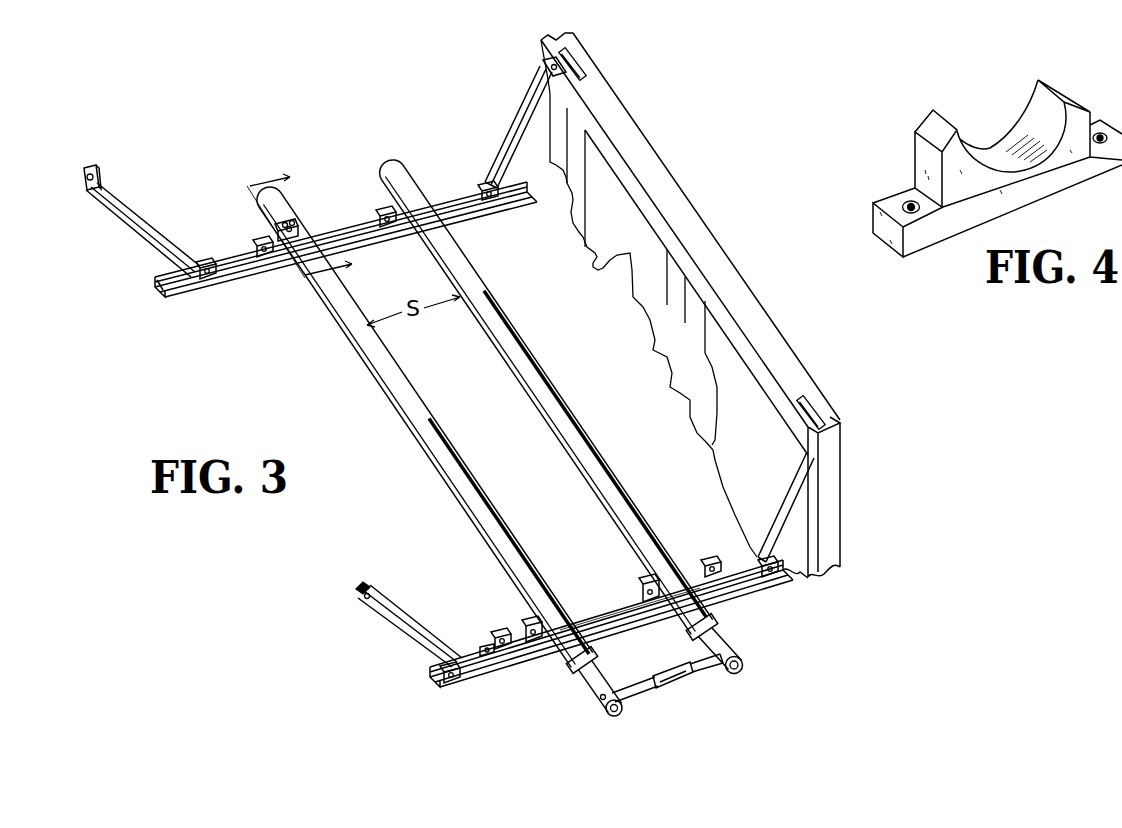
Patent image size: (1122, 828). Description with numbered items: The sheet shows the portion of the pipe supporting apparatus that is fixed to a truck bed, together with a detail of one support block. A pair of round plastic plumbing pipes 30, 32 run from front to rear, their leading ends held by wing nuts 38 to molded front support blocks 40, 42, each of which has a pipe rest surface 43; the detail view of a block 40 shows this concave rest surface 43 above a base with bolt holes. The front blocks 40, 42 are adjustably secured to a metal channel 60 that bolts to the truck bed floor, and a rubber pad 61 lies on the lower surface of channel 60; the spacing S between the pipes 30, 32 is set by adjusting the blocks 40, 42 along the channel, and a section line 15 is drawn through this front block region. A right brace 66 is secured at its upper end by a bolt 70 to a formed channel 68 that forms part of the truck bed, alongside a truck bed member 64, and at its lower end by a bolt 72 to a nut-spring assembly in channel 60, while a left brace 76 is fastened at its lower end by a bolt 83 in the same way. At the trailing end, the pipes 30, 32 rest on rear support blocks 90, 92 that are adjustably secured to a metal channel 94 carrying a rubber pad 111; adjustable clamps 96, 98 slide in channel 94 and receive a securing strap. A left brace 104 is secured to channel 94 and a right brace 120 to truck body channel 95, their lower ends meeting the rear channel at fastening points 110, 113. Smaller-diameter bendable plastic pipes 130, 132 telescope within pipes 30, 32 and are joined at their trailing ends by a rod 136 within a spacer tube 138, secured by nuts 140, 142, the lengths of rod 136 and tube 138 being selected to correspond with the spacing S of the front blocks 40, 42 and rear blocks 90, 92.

In FIG. 3, the section line 15- 15 is at (286, 235).
In FIG. 3, the plumbing pipe 30 is at (392, 375).
In FIG. 3, the plumbing pipe 32 is at (537, 377).
In FIG. 3, the wing nut 38 is at (290, 222).
In FIG. 3, the front support block 40 is at (257, 244).
In FIG. 4, the front support block 40 is at (915, 152).
In FIG. 3, the front support block 42 is at (381, 208).
In FIG. 4, the pipe rest surface 43 is at (1018, 128).
In FIG. 3, the metal channel 60 is at (242, 280).
In FIG. 3, the rubber pad 61 is at (161, 300).
In FIG. 3, the side beam 64 is at (714, 262).
In FIG. 3, the right brace 66 is at (520, 111).
In FIG. 3, the formed channel 68 is at (578, 180).
In FIG. 3, the bolt 70 is at (547, 65).
In FIG. 3, the bolt 72 is at (486, 184).
In FIG. 3, the left brace 76 is at (136, 213).
In FIG. 3, the bolt 83 is at (209, 258).
In FIG. 3, the rear support block 90 is at (528, 617).
In FIG. 3, the rear support block 92 is at (645, 573).
In FIG. 3, the metal channel 94 is at (610, 606).
In FIG. 3, the truck body channel 95 is at (812, 512).
In FIG. 3, the adjustable clamp 96 is at (497, 637).
In FIG. 3, the adjustable clamp 98 is at (722, 588).
In FIG. 3, the left brace 104 is at (393, 612).
In FIG. 3, the brace bracket 110 is at (455, 683).
In FIG. 3, the rubber pad 111 is at (470, 680).
In FIG. 3, the brace bracket 113 is at (770, 580).
In FIG. 3, the right brace 120 is at (803, 482).
In FIG. 3, the plumbing pipe 130 is at (590, 677).
In FIG. 3, the plumbing pipe 132 is at (700, 640).
In FIG. 3, the rod 136 is at (665, 671).
In FIG. 3, the spacer tube 138 is at (646, 688).
In FIG. 3, the nut 140 is at (738, 655).
In FIG. 3, the nut 142 is at (600, 701).